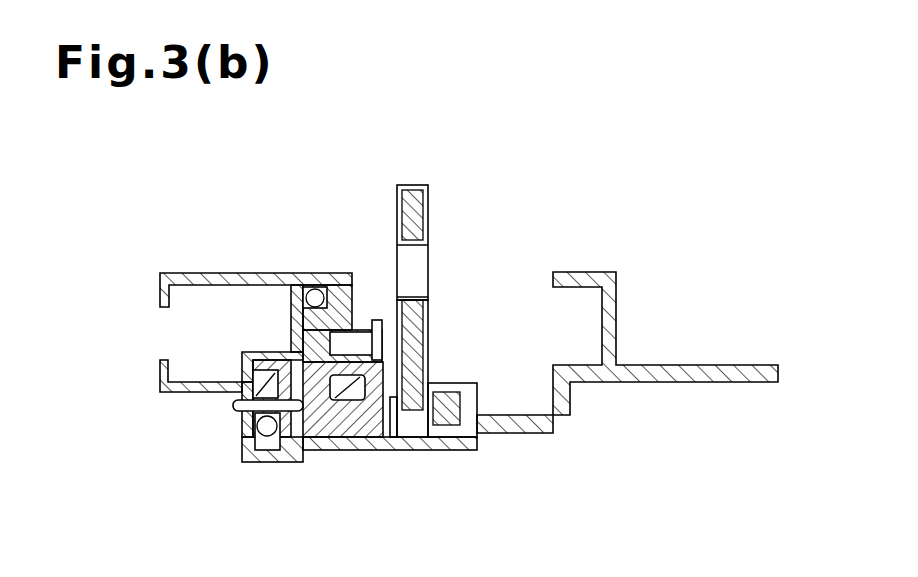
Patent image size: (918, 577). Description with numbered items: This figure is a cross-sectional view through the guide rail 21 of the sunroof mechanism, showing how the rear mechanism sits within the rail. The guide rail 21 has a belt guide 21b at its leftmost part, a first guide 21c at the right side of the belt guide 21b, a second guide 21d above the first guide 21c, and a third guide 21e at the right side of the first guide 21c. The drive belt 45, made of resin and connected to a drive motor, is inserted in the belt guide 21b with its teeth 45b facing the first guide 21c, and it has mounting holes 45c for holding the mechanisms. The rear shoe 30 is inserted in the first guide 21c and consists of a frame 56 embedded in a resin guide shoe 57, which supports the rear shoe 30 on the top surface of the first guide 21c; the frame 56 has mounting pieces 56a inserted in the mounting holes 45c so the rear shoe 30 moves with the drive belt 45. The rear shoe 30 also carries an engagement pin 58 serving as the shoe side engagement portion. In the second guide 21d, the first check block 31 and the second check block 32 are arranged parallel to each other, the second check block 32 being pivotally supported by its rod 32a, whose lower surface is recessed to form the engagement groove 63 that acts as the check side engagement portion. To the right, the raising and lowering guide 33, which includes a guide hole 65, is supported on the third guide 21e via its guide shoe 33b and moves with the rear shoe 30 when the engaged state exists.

The guide rail 21 is at (690, 370).
The belt guide 21b is at (285, 455).
The first guide 21c is at (293, 463).
The second guide 21d is at (297, 350).
The third guide 21e is at (417, 442).
The rear shoe 30 is at (370, 435).
The first check block 31 is at (308, 283).
The second check block 32 is at (348, 282).
The rod 32a is at (312, 297).
The raising and lowering guide 33 is at (417, 199).
The guide shoe 33b is at (452, 440).
The drive belt 45 is at (262, 452).
The teeth 45b is at (252, 427).
The mounting holes 45c is at (258, 405).
The frame 56 is at (327, 408).
The mounting pieces 56a is at (405, 310).
The guide shoe 57 is at (343, 433).
The engagement pin 58 is at (356, 325).
The engagement groove 63 is at (330, 342).
The guide hole 65 is at (412, 247).